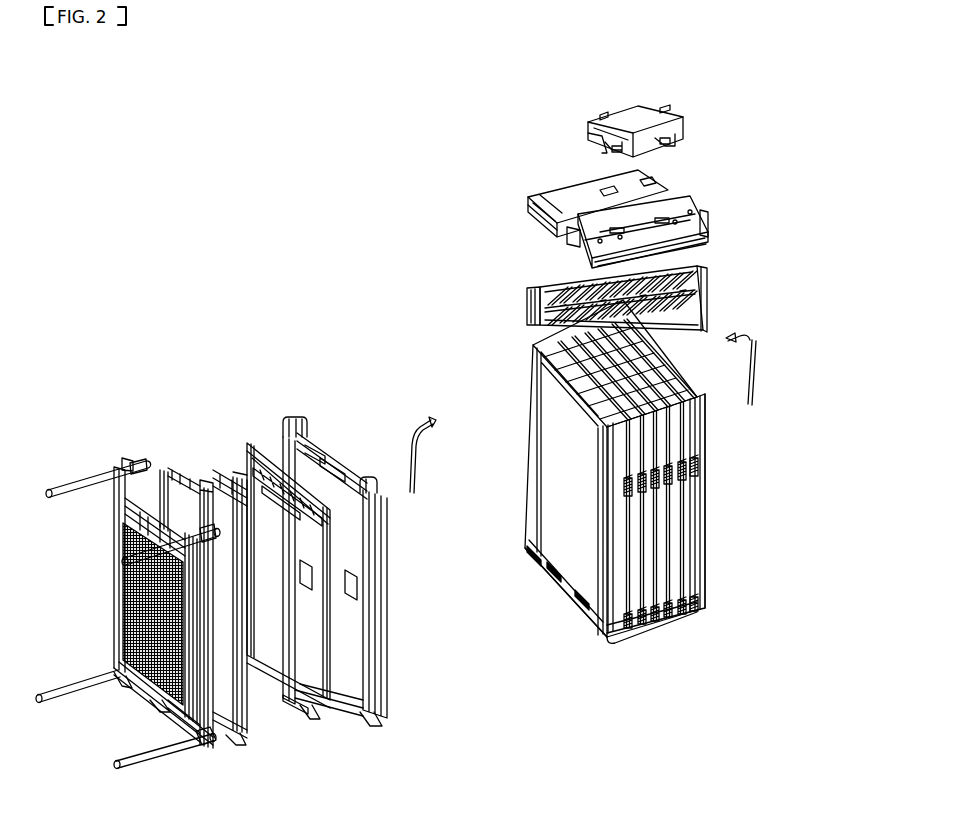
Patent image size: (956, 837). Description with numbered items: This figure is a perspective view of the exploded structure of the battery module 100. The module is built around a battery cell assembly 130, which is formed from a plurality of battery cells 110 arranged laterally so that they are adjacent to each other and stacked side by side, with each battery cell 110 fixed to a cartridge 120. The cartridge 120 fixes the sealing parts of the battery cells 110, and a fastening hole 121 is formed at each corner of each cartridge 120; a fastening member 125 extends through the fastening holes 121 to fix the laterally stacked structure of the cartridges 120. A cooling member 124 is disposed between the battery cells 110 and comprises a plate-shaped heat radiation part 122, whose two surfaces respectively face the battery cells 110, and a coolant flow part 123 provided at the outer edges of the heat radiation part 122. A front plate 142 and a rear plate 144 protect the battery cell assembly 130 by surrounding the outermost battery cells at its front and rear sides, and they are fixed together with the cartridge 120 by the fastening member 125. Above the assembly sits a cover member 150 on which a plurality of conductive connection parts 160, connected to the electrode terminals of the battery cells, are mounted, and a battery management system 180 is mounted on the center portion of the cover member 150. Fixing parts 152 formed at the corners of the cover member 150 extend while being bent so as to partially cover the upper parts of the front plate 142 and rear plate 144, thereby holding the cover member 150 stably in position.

The battery module 100 is at (100, 136).
The battery cell 110 is at (310, 660).
The cartridge 120 is at (320, 448).
The fastening hole 121 is at (290, 418).
The heat radiation part 122 is at (228, 472).
The coolant flow part 123 is at (185, 470).
The cooling member 124 is at (205, 382).
The fastening member 125 is at (72, 486).
The battery cell assembly 130 is at (706, 609).
The front plate 142 is at (115, 573).
The rear plate 144 is at (705, 438).
The cover member 150 is at (527, 287).
The fixing part 152 is at (527, 318).
The conductive connection part 160 is at (580, 283).
The battery management system (BMS) 180 is at (710, 230).